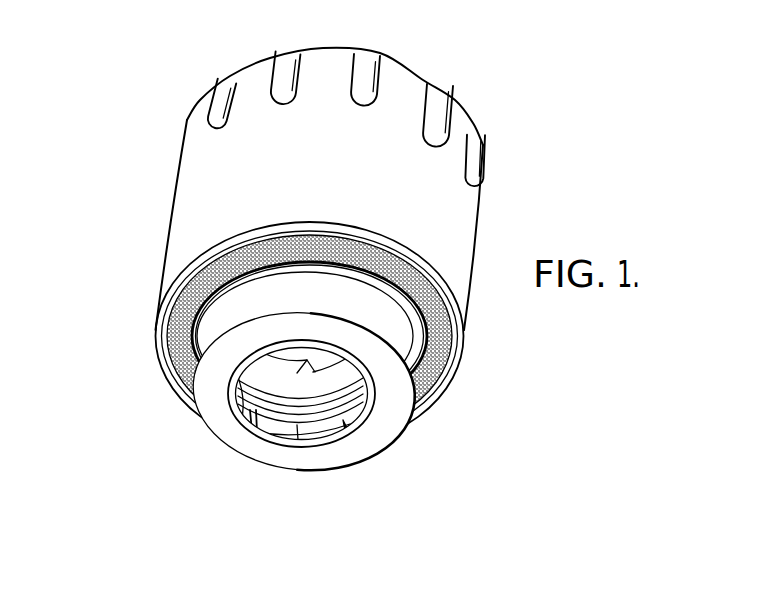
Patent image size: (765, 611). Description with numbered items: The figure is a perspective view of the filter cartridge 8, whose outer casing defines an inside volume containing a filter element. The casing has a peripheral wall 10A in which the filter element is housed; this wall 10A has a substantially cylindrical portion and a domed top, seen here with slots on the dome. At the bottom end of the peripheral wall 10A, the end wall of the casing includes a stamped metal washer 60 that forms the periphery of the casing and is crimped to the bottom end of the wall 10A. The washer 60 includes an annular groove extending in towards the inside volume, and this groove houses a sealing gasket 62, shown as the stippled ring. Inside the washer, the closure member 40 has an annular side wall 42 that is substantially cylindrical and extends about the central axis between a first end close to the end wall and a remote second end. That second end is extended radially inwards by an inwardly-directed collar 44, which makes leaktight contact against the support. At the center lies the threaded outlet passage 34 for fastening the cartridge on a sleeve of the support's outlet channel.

The cartridge 8 is at (167, 182).
The peripheral wall 10A is at (427, 200).
The stamped metal washer 60 is at (163, 302).
The sealing gasket 62 is at (180, 338).
The annular side wall 42 is at (385, 340).
The inwardly-directed collar 44 is at (378, 422).
The closure member 40 is at (343, 466).
The outlet passage 34 is at (257, 378).